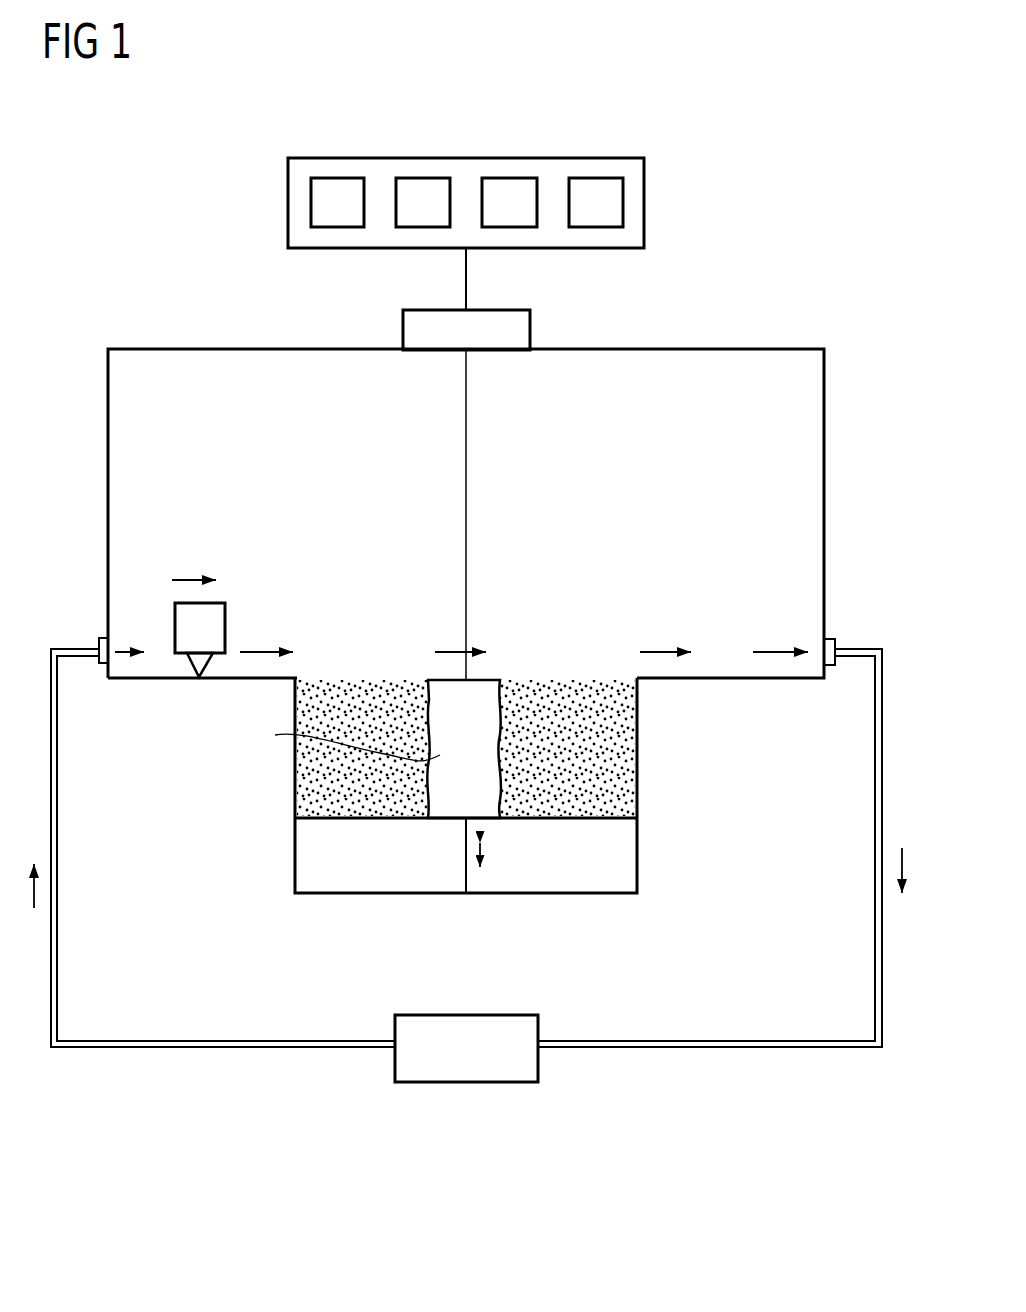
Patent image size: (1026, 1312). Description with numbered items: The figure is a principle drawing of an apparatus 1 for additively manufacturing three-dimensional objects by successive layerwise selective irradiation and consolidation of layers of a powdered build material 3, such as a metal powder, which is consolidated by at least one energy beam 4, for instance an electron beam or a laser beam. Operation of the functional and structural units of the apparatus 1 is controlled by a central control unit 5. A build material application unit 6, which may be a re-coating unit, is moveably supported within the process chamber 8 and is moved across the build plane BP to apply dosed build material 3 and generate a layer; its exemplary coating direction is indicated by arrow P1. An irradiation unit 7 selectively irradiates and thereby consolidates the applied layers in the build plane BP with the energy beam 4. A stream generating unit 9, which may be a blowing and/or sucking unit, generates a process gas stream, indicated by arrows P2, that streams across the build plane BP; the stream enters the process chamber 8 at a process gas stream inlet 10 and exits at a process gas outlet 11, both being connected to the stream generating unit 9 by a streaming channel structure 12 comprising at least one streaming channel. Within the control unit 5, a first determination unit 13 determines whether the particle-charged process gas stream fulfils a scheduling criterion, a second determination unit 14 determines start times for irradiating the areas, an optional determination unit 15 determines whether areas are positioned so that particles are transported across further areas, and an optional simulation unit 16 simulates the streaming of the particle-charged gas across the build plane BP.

The apparatus 1 is at (815, 110).
The build material 3 is at (627, 785).
The energy beam 4 is at (468, 557).
The control unit 5 is at (647, 205).
The build material application unit 6 is at (246, 600).
The irradiation unit 7 is at (532, 330).
The process chamber 8 is at (826, 425).
The stream generating unit 9 is at (467, 1082).
The process gas stream inlet 10 is at (102, 637).
The process gas outlet 11 is at (828, 638).
The streaming channel structure 12 is at (712, 1048).
The first determination unit 13 is at (335, 177).
The second determination unit 14 is at (420, 177).
The determination unit 15 is at (507, 177).
The simulation unit 16 is at (595, 177).
The coating direction arrow P1 is at (193, 580).
The process gas stream arrows P2 is at (452, 650).
The build plane BP is at (378, 670).